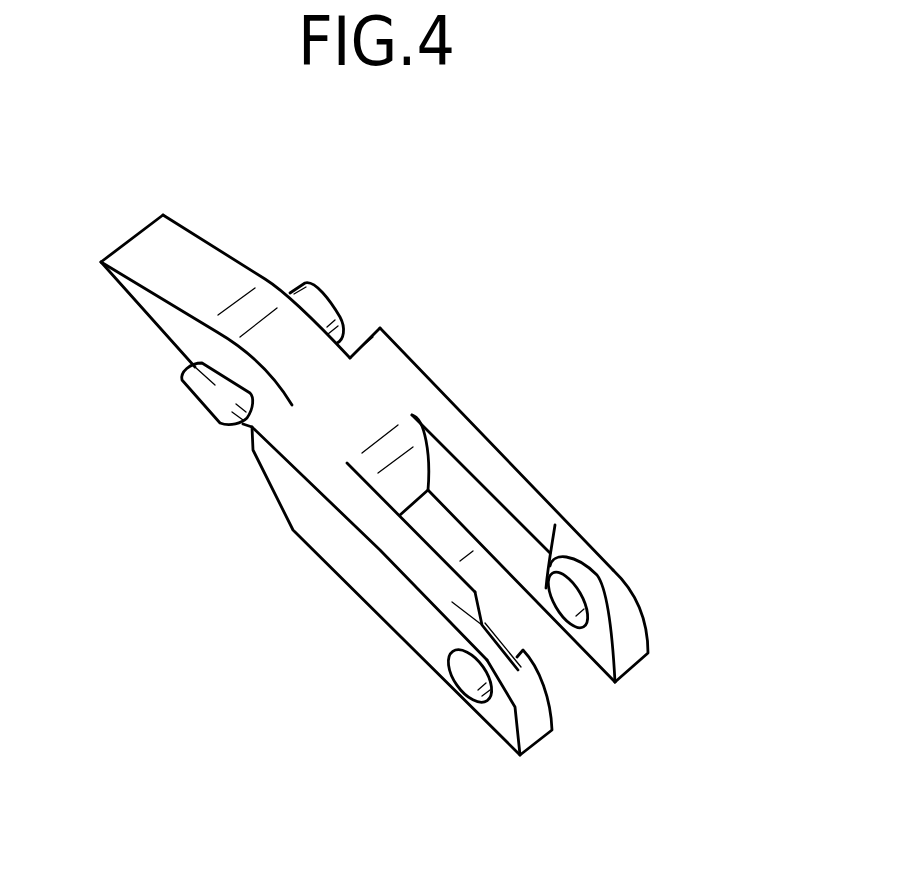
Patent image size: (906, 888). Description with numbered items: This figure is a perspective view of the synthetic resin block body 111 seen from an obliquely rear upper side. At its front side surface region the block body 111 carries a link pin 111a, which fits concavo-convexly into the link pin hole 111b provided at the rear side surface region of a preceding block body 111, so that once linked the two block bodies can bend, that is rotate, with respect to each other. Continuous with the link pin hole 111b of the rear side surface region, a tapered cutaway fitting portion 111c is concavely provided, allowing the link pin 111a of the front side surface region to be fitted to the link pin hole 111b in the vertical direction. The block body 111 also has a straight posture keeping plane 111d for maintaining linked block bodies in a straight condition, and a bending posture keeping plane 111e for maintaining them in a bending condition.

The synthetic resin block body 111 is at (582, 309).
The link pin 111a is at (325, 300).
The link pin hole 111b is at (585, 597).
The tapered cutaway fitting portion 111c is at (580, 565).
The straight posture keeping plane 111d is at (118, 290).
The bending posture keeping plane 111e is at (272, 487).